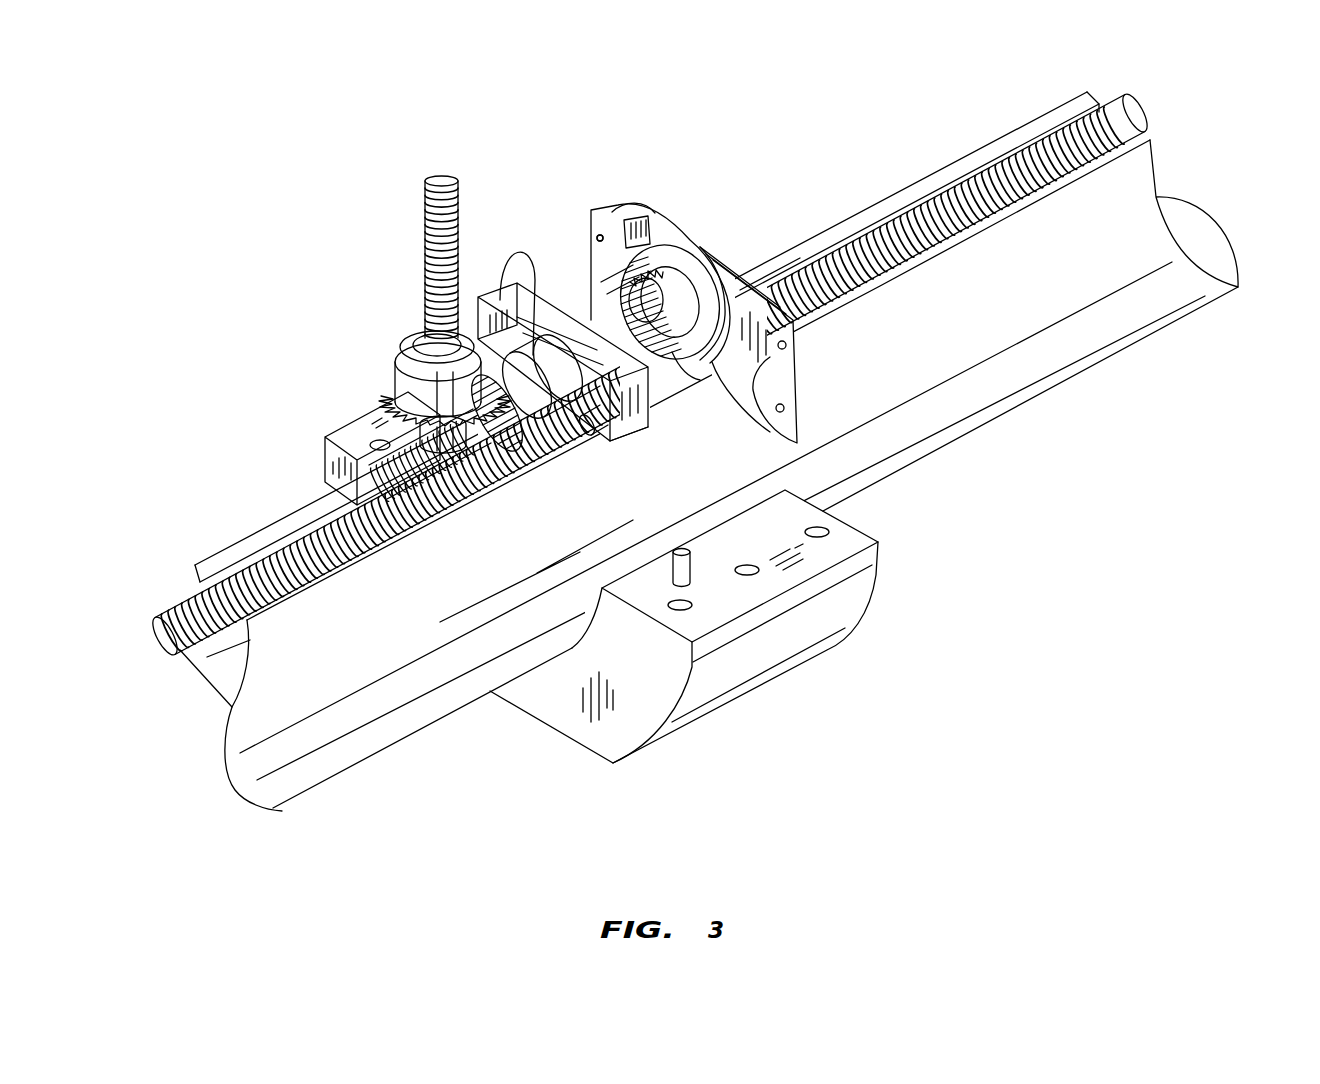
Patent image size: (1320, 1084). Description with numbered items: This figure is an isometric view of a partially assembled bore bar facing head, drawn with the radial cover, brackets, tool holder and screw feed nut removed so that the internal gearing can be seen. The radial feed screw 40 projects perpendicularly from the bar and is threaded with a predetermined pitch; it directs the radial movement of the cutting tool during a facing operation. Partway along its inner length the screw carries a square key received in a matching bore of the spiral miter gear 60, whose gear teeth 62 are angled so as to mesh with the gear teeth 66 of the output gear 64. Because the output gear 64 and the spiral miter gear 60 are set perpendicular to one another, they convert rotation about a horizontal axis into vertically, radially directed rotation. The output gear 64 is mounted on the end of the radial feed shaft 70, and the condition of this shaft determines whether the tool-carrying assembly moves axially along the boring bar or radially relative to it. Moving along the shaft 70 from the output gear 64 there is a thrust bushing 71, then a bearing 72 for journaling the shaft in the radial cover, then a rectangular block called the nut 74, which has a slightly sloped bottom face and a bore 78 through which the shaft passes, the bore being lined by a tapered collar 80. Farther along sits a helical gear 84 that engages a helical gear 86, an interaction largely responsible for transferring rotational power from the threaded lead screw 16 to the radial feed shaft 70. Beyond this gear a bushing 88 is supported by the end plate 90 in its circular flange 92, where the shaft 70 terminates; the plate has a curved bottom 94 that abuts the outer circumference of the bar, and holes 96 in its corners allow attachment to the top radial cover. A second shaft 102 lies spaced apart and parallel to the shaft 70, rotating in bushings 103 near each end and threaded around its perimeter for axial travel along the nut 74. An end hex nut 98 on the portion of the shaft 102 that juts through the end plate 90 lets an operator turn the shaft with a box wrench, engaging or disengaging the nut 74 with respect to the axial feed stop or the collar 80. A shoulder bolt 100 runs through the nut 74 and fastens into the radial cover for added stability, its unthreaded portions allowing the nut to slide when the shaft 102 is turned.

The threaded lead screw 16 is at (283, 557).
The radial feed screw 40 is at (423, 227).
The spiral miter gear 60 is at (385, 372).
The gear teeth 62 is at (340, 440).
The output gear 64 is at (530, 462).
The gear teeth 66 is at (487, 470).
The radial feed shaft 70 is at (600, 288).
The thrust bushing 71 is at (512, 293).
The bearing 72 is at (532, 348).
The nut 74 is at (570, 287).
The bore 78 is at (655, 410).
The tapered collar 80 is at (623, 420).
The helical gear 84 is at (650, 230).
The helical gear 86 is at (690, 370).
The bushing 88 is at (673, 280).
The end plate 90 is at (767, 280).
The circular flange 92 is at (733, 270).
The curved bottom 94 is at (740, 410).
The holes 96 is at (596, 207).
The end hex nut 98 is at (700, 250).
The shoulder bolt 100 is at (587, 428).
The shaft 102 is at (600, 236).
The bushings 103 is at (427, 297).